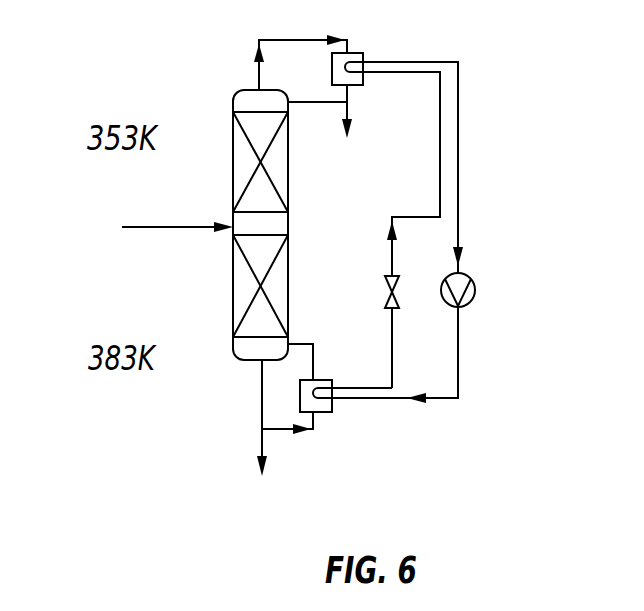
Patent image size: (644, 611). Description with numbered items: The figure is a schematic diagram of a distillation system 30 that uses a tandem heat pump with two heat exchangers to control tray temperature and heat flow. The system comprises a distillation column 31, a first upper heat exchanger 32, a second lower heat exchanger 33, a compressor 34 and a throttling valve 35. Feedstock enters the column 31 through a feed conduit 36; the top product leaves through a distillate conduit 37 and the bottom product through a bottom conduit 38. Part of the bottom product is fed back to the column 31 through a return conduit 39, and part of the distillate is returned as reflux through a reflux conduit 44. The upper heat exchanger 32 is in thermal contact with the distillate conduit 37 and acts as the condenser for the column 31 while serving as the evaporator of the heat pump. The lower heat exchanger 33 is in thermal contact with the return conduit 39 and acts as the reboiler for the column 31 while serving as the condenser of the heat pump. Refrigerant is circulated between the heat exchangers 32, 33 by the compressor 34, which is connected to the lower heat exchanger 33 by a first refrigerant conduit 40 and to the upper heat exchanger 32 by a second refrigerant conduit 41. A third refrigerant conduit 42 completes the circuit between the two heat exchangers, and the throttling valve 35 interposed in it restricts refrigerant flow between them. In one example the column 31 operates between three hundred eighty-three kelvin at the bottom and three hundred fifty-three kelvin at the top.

The distillation system 30 is at (125, 205).
The distillation column 31 is at (233, 262).
The first upper heat exchanger 32 is at (328, 60).
The second lower heat exchanger 33 is at (317, 413).
The compressor 34 is at (476, 292).
The throttling valve 35 is at (385, 284).
The feed conduit 36 is at (145, 230).
The distillate conduit 37 is at (259, 77).
The bottom conduit 38 is at (255, 446).
The return conduit 39 is at (288, 343).
The first refrigerant conduit 40 is at (458, 362).
The second refrigerant conduit 41 is at (458, 172).
The third refrigerant conduit 42 is at (392, 256).
The reflux conduit 44 is at (313, 104).